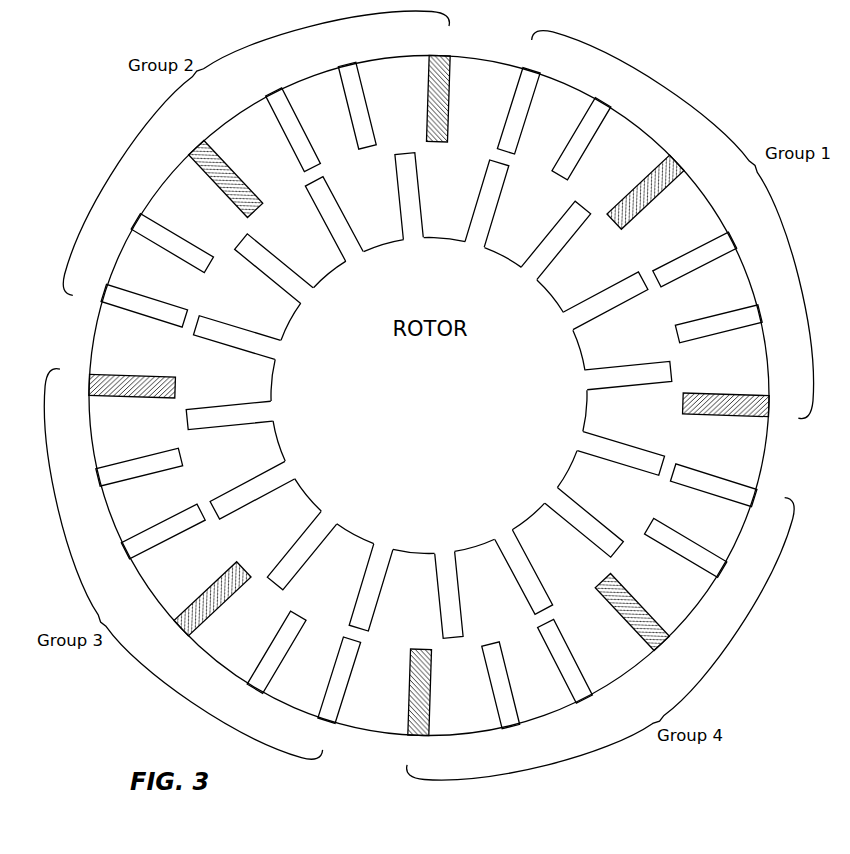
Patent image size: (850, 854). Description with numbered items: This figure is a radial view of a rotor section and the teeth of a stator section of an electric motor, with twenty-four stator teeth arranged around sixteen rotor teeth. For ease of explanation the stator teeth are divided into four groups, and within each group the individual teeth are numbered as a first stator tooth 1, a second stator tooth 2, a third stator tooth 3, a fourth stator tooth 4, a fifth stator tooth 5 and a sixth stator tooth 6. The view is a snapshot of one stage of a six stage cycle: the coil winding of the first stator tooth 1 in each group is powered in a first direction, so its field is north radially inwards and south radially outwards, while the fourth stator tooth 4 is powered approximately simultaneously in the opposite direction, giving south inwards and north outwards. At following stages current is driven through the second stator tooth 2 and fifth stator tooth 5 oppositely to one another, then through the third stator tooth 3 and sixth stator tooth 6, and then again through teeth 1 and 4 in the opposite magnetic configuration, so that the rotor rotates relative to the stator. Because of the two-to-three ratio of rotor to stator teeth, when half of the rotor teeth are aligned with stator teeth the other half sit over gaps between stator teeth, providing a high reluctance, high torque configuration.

The first stator tooth 1 is at (429, 395).
The second stator tooth 2 is at (428, 395).
The third stator tooth 3 is at (429, 396).
The fourth stator tooth 4 is at (428, 395).
The fifth stator tooth 5 is at (429, 396).
The sixth stator tooth 6 is at (428, 395).